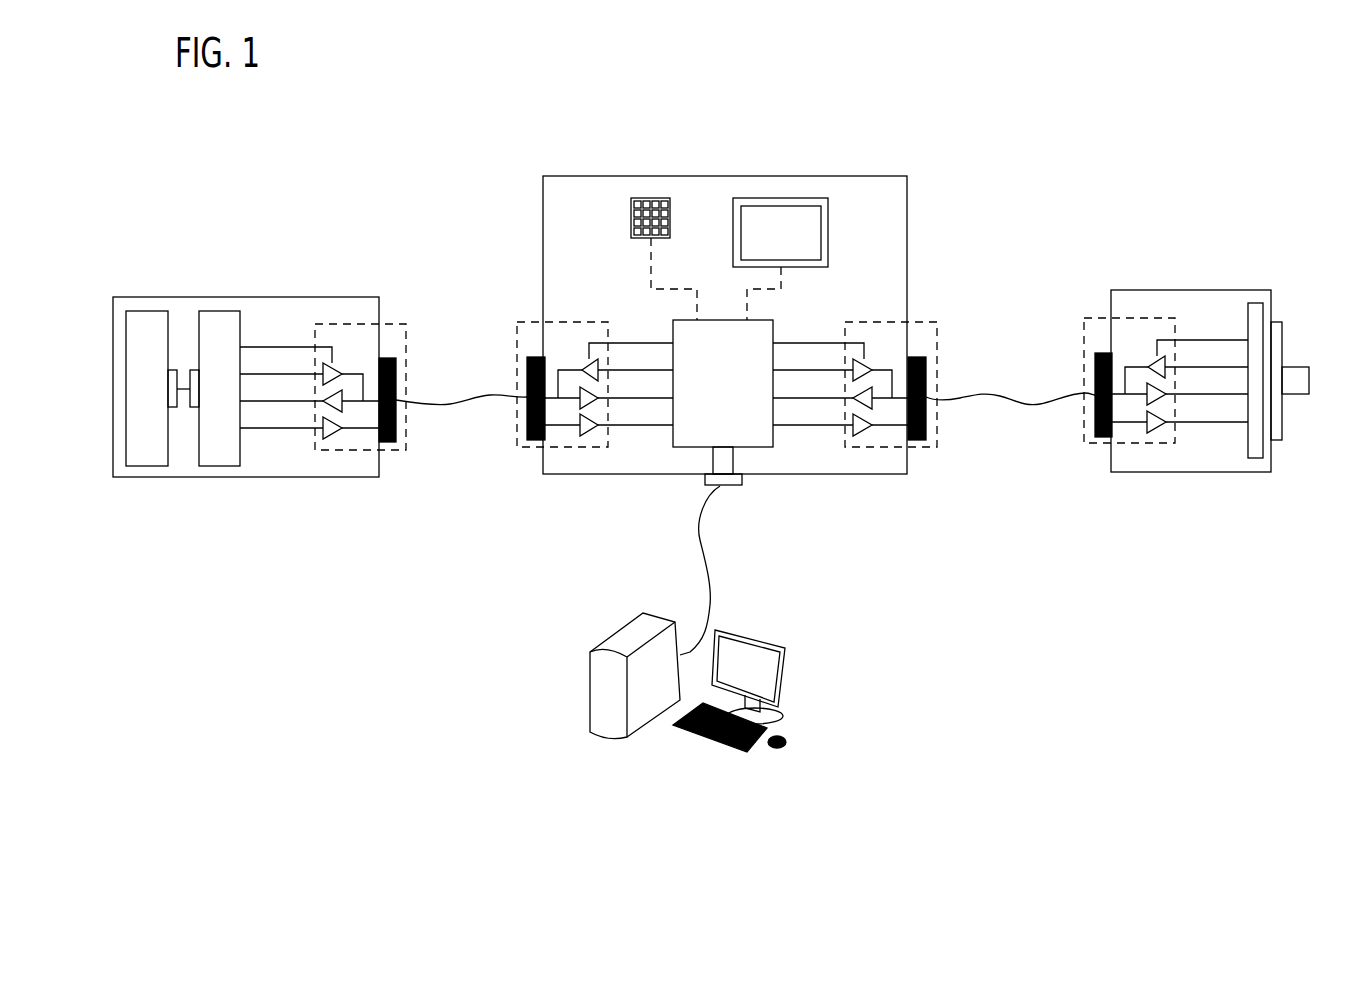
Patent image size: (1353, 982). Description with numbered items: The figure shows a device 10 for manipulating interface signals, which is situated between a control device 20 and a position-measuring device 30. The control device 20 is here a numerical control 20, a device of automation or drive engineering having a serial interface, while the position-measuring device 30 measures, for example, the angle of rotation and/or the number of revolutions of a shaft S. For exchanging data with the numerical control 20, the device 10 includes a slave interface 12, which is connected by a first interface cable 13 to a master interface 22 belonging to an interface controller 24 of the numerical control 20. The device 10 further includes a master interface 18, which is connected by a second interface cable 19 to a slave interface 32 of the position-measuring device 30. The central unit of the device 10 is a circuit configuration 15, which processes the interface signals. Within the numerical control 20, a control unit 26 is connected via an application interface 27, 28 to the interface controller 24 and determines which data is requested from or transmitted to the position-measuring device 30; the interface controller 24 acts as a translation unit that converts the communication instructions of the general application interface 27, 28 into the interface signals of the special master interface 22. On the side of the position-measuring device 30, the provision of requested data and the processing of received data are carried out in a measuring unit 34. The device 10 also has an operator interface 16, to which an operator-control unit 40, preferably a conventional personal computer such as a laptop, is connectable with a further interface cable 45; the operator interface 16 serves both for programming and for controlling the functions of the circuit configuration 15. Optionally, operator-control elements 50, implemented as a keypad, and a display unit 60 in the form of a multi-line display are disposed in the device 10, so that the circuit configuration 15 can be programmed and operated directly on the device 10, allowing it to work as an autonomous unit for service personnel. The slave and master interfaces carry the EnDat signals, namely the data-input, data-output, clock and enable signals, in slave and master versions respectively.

The device for manipulating interface signals 10 is at (872, 474).
The slave interface 12 is at (532, 448).
The first interface cable 13 is at (450, 404).
The circuit configuration 15 is at (693, 433).
The operator interface 16 is at (730, 485).
The master interface 18 is at (928, 470).
The second interface cable 19 is at (1018, 405).
The control device 20 is at (348, 478).
The master interface 22 is at (388, 324).
The interface controller 24 is at (243, 463).
The control unit 26 is at (137, 450).
The application interface 27 is at (172, 372).
The application interface 28 is at (195, 463).
The position-measuring device 30 is at (1163, 475).
The slave interface 32 is at (1085, 470).
The measuring unit 34 is at (1262, 472).
The operator-control unit 40 is at (600, 695).
The further interface cable 45 is at (710, 600).
The operator-control elements 50 is at (646, 198).
The display unit 60 is at (783, 223).
The shaft S is at (1300, 387).